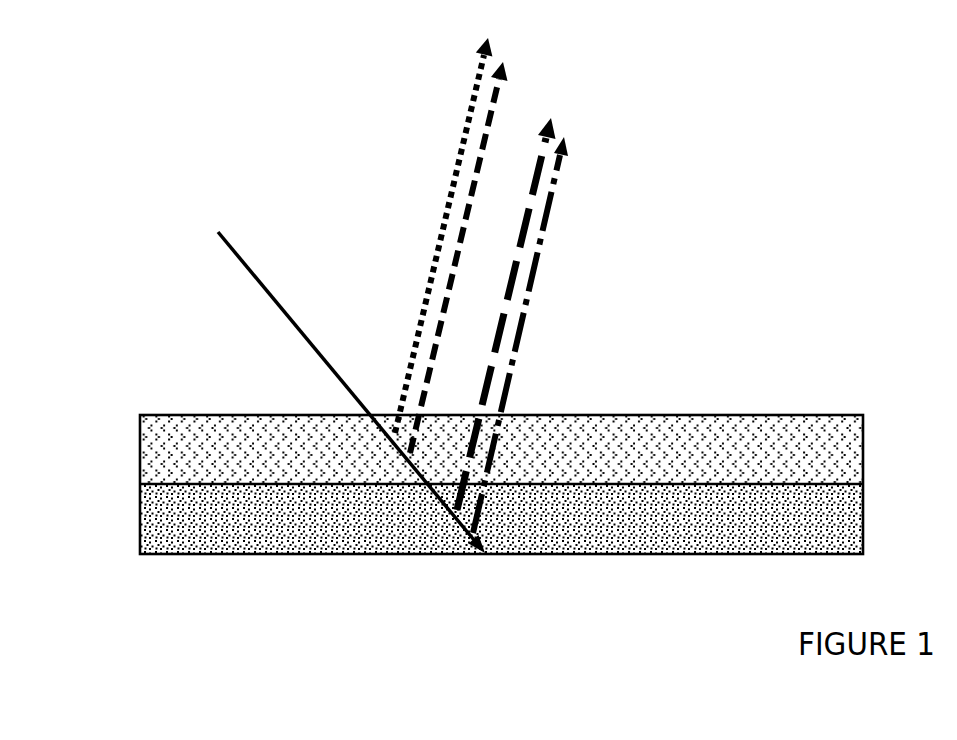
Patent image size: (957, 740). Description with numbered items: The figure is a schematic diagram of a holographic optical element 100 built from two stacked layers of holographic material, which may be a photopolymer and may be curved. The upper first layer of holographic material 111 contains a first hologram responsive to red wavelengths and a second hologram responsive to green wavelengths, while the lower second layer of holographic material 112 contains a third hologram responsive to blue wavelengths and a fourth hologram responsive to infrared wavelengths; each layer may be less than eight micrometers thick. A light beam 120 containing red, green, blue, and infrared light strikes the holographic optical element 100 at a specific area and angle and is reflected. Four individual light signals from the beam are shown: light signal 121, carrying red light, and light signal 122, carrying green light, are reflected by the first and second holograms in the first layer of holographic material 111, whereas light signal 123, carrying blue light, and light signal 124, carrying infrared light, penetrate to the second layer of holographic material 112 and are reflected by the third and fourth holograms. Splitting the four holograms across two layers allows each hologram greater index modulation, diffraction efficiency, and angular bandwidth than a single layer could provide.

The holographic optical element 100 is at (486, 458).
The first layer of holographic material 111 is at (863, 456).
The second layer of holographic material 112 is at (863, 521).
The light beam 120 is at (260, 280).
The light signal 121 is at (452, 172).
The light signal 122 is at (497, 112).
The light signal 123 is at (503, 313).
The light signal 124 is at (520, 338).